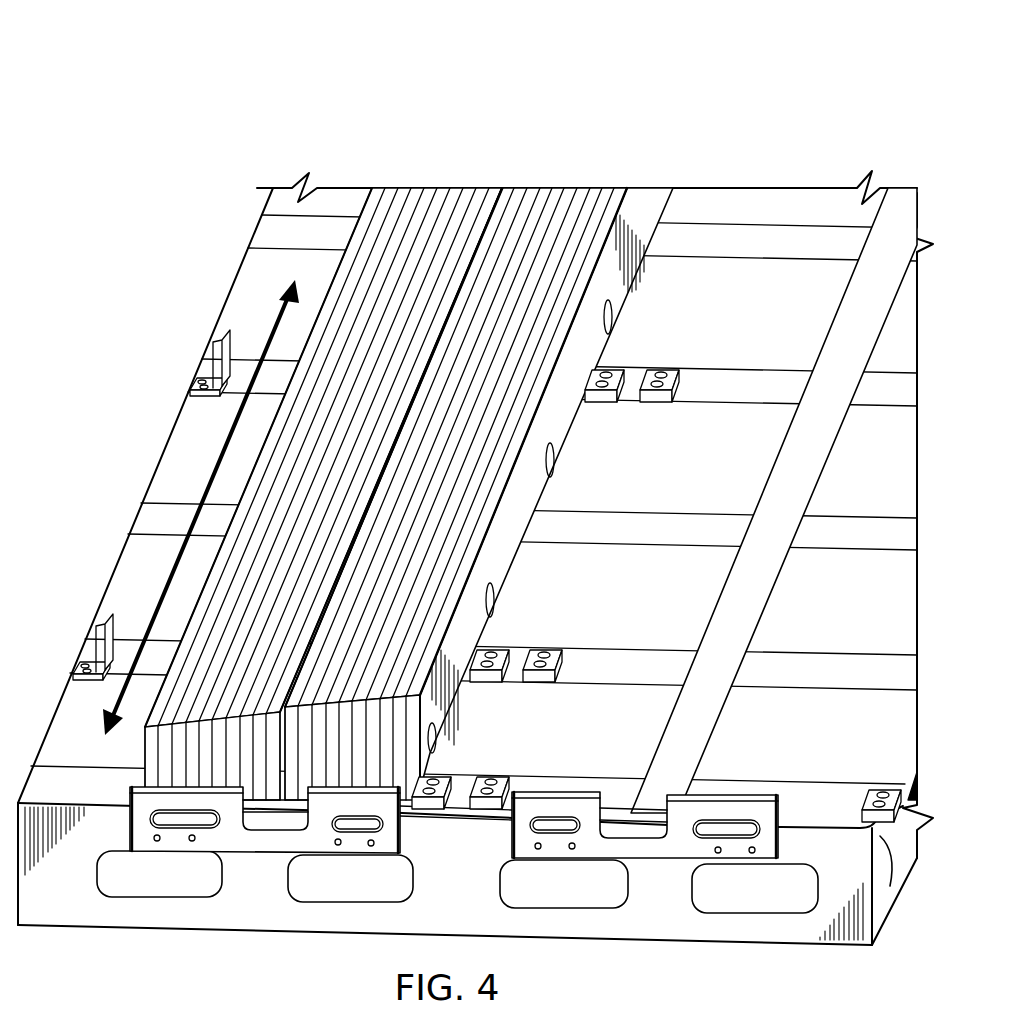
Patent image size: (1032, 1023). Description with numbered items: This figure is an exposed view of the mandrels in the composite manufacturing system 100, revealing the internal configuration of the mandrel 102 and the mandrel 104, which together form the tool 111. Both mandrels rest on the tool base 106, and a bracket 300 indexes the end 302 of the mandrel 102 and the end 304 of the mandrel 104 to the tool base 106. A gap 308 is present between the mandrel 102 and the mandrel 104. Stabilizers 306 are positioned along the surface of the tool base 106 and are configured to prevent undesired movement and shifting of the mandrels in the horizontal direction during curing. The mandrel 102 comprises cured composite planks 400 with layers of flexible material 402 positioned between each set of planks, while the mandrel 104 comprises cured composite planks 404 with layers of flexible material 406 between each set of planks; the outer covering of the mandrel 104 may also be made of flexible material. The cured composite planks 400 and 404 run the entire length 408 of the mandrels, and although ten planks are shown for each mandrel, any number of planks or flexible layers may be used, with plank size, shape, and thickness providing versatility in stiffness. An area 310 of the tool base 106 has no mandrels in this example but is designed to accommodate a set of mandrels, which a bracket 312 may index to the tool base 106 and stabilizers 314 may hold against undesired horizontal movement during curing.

The composite manufacturing system 100 is at (301, 77).
The mandrel 102 is at (581, 419).
The mandrel 104 is at (386, 458).
The tool base 106 is at (735, 474).
The tool 111 is at (579, 110).
The bracket 300 is at (265, 848).
The end 302 is at (375, 764).
The end 304 is at (323, 458).
The stabilizers 306 is at (513, 646).
The gap 308 is at (503, 185).
The area 310 is at (746, 640).
The bracket 312 is at (771, 796).
The stabilizers 314 is at (509, 766).
The cured composite planks 400 is at (409, 458).
The layers of flexible material 402 is at (601, 185).
The cured composite planks 404 is at (429, 185).
The layers of flexible material 406 is at (373, 185).
The length 408 is at (268, 318).